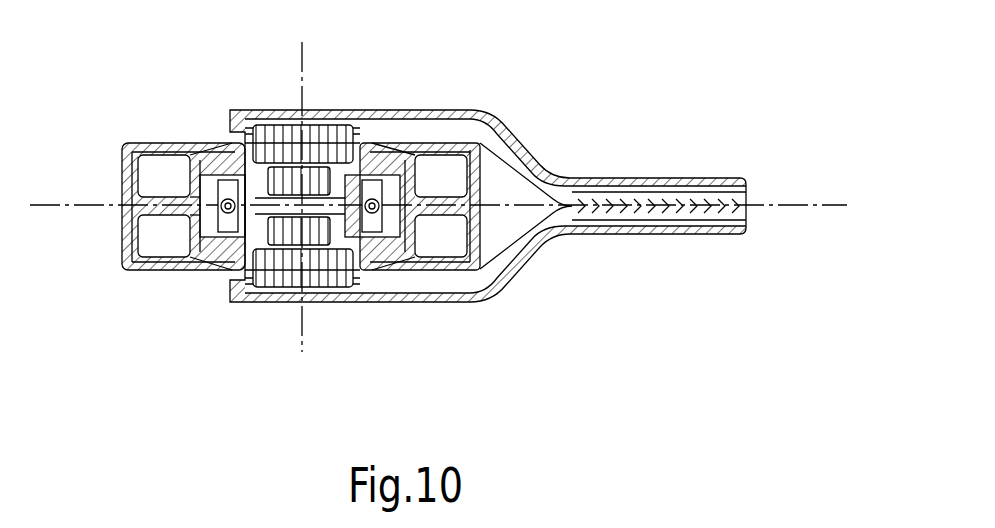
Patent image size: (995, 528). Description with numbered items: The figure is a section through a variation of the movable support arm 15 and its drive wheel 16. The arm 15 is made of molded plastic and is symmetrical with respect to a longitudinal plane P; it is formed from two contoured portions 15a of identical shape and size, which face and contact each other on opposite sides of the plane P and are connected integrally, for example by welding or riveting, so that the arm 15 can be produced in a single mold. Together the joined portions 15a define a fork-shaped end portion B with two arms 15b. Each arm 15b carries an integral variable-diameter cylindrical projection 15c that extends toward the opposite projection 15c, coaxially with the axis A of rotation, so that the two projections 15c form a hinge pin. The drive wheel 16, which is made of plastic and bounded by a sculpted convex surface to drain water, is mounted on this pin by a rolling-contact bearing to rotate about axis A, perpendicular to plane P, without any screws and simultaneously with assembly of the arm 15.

The movable support member or arm 15 is at (627, 170).
The contoured portions 15a is at (529, 160).
The arms of fork-shaped portion 15b is at (347, 112).
The variable-diameter cylindrical projection 15c is at (267, 112).
The drive wheel 16 is at (183, 278).
The axis of rotation of wheel A is at (305, 90).
The fork-shaped end portion B is at (480, 305).
The longitudinal plane of symmetry P is at (55, 208).